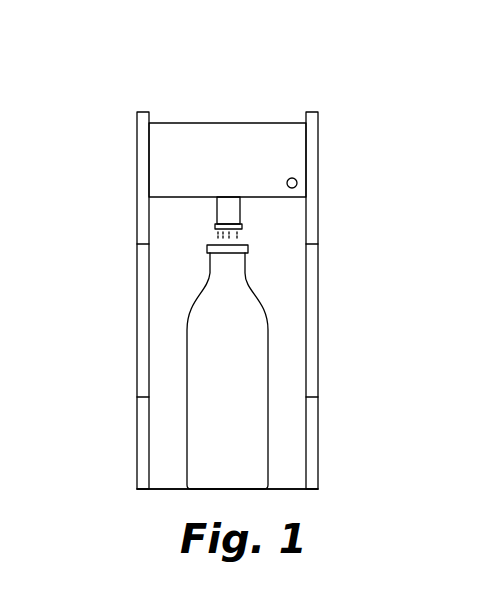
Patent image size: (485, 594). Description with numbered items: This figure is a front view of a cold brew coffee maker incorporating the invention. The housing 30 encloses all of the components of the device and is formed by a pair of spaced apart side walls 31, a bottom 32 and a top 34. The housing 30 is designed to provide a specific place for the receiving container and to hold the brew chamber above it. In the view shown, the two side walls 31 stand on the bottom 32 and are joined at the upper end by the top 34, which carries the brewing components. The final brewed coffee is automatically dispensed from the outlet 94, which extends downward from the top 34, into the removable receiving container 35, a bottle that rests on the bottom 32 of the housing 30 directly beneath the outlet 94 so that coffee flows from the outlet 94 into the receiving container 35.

The housing 30 is at (111, 90).
The side walls 31 is at (136, 253).
The bottom 32 is at (168, 479).
The top 34 is at (230, 123).
The removable receiving container 35 is at (198, 363).
The outlet 94 is at (228, 213).